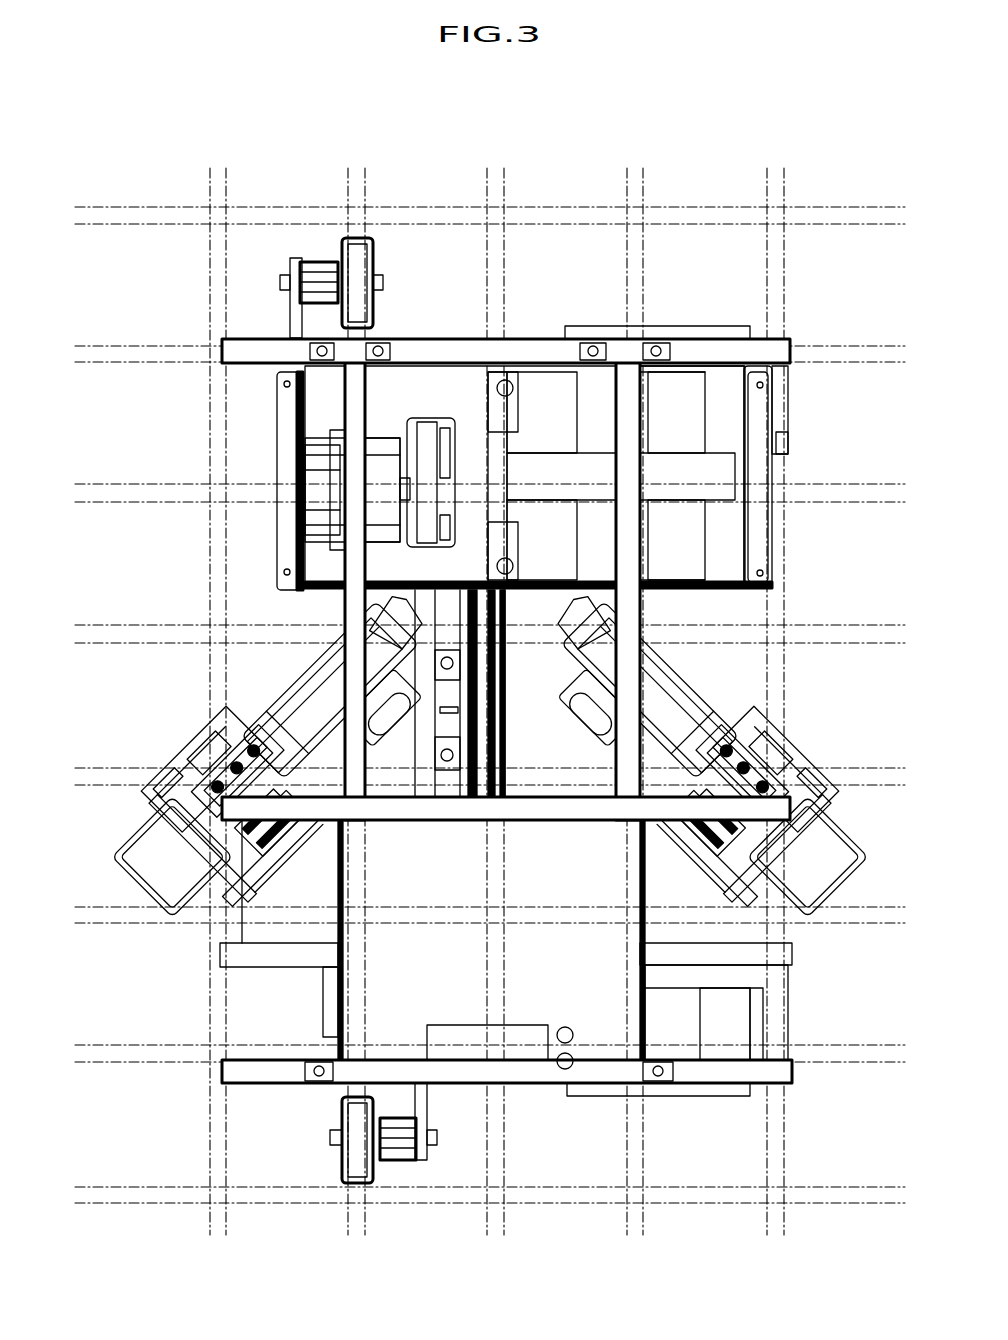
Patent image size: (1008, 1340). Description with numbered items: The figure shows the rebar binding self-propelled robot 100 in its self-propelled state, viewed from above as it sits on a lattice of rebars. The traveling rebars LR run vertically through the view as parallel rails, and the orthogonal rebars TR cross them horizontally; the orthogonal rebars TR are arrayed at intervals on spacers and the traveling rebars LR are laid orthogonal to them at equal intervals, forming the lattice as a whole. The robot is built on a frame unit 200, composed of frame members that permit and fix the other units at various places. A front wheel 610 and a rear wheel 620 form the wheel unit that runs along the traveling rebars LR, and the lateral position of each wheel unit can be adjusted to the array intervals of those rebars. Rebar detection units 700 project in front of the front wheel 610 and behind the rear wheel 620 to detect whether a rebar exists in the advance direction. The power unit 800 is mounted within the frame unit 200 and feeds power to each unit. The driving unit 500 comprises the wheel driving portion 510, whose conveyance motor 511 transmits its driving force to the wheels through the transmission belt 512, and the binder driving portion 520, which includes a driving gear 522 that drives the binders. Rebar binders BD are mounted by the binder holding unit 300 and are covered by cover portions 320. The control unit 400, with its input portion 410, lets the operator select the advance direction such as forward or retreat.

The rebar binding self-propelled robot 100 is at (262, 180).
The frame unit 200 is at (778, 955).
The binder holding unit 300 is at (235, 736).
The cover portion 320 is at (200, 758).
The control unit 400 is at (605, 1068).
The input portion 410 is at (531, 1072).
The driving unit 500 is at (76, 600).
The wheel driving portion 510 is at (140, 557).
The conveyance motor 511 is at (302, 508).
The transmission belt 512 is at (422, 604).
The binder driving portion 520 is at (230, 853).
The driving gear 522 is at (228, 892).
The front wheel 610 is at (690, 326).
The rear wheel 620 is at (328, 1005).
The rebar detection unit 700 is at (375, 252).
The power unit 800 is at (688, 414).
The traveling rebar LR is at (637, 188).
The orthogonal rebar TR is at (854, 626).
The rebar binder BD is at (300, 706).